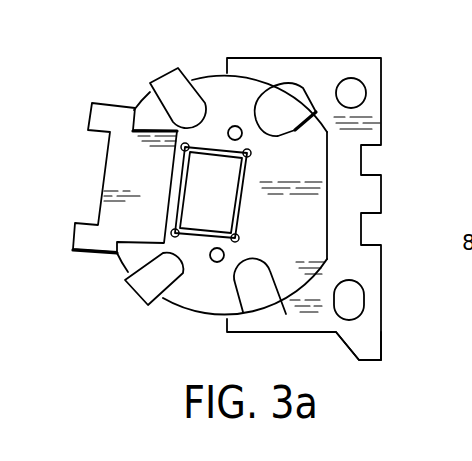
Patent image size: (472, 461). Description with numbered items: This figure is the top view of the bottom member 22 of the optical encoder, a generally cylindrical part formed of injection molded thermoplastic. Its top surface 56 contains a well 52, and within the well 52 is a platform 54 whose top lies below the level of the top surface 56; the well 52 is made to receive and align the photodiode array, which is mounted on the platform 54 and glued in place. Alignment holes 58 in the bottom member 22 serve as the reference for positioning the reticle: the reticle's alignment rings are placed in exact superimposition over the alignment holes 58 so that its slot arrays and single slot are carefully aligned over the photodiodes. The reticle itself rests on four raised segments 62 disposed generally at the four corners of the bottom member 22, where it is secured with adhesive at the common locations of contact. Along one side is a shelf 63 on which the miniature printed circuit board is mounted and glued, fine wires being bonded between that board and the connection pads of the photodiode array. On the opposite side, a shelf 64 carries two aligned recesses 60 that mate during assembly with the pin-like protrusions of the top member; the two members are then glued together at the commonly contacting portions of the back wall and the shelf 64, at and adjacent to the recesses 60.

The bottom member 22 is at (116, 68).
The well 52 is at (250, 152).
The platform 54 is at (215, 190).
The top surface 56 is at (299, 225).
The alignment holes 58 is at (217, 264).
The recesses 60 is at (352, 93).
The raised segments 62 is at (187, 107).
The shelf 63 is at (128, 173).
The shelf 64 is at (373, 317).